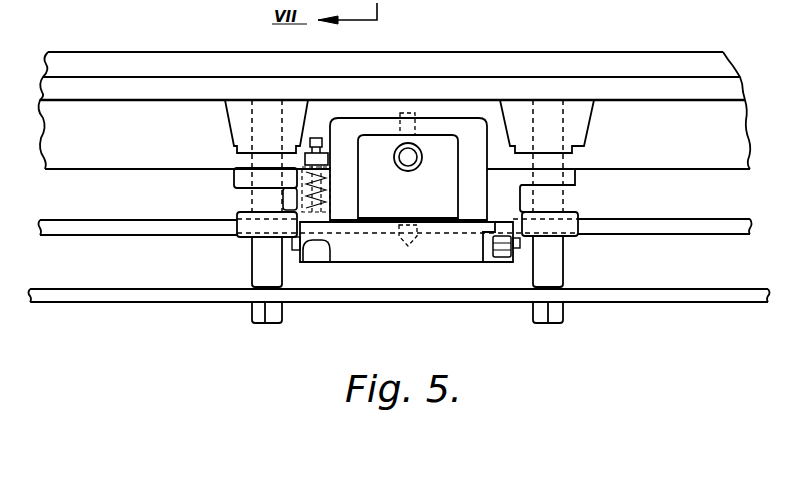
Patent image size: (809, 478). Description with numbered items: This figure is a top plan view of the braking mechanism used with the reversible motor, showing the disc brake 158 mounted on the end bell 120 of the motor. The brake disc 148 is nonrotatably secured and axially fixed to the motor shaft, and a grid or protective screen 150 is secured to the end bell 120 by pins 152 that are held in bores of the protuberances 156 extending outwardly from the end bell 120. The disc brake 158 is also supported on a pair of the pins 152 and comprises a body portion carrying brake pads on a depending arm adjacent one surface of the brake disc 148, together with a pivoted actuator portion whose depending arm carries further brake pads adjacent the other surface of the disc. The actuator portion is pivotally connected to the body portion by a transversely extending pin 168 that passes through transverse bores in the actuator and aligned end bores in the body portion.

The end bell 120 is at (738, 84).
The brake disc 148 is at (703, 218).
The protective screen 150 is at (718, 303).
The pins 152 is at (251, 263).
The protuberances 156 is at (227, 116).
The disc brake 158 is at (460, 118).
The transversely extending pin 168 is at (522, 250).